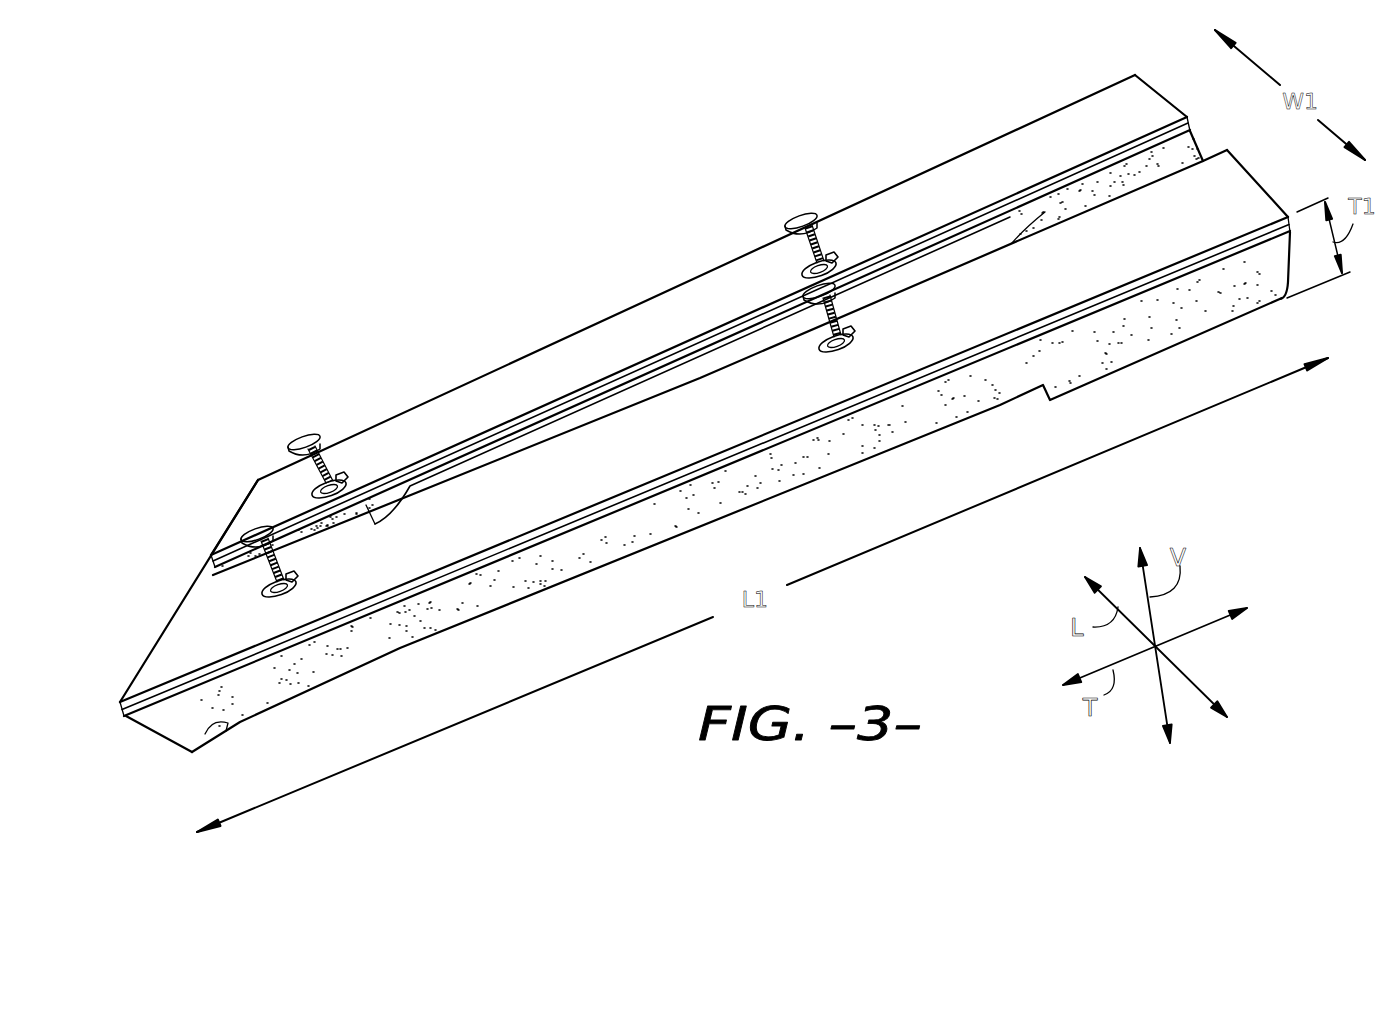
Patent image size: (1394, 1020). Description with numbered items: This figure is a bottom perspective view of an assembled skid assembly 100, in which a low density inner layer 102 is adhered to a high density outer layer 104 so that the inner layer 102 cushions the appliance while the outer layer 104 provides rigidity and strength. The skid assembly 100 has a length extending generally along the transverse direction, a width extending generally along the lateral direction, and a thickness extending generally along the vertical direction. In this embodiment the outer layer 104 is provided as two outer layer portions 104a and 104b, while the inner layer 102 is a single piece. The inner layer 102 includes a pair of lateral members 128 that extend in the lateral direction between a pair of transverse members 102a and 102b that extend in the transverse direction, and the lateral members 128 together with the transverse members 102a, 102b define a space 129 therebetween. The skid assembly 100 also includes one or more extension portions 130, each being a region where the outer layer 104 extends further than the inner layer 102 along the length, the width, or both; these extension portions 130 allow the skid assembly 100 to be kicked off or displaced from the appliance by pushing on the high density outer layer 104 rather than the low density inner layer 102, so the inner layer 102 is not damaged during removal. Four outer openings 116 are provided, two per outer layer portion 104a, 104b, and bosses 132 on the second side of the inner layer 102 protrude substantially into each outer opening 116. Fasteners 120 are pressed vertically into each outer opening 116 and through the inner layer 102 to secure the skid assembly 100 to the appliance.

The skid assembly 100 is at (431, 236).
The inner layer 102 is at (520, 575).
The transverse member 102a is at (182, 742).
The transverse member 102b is at (718, 345).
The outer layer 104 is at (783, 443).
The outer layer portion 104a is at (465, 410).
The outer layer portion 104b is at (615, 455).
The outer opening 116 is at (340, 472).
The fastener 120 is at (328, 470).
The lateral member 128 is at (200, 586).
The space 129 is at (653, 393).
The extension portion 130 is at (143, 719).
The boss 132 is at (320, 484).